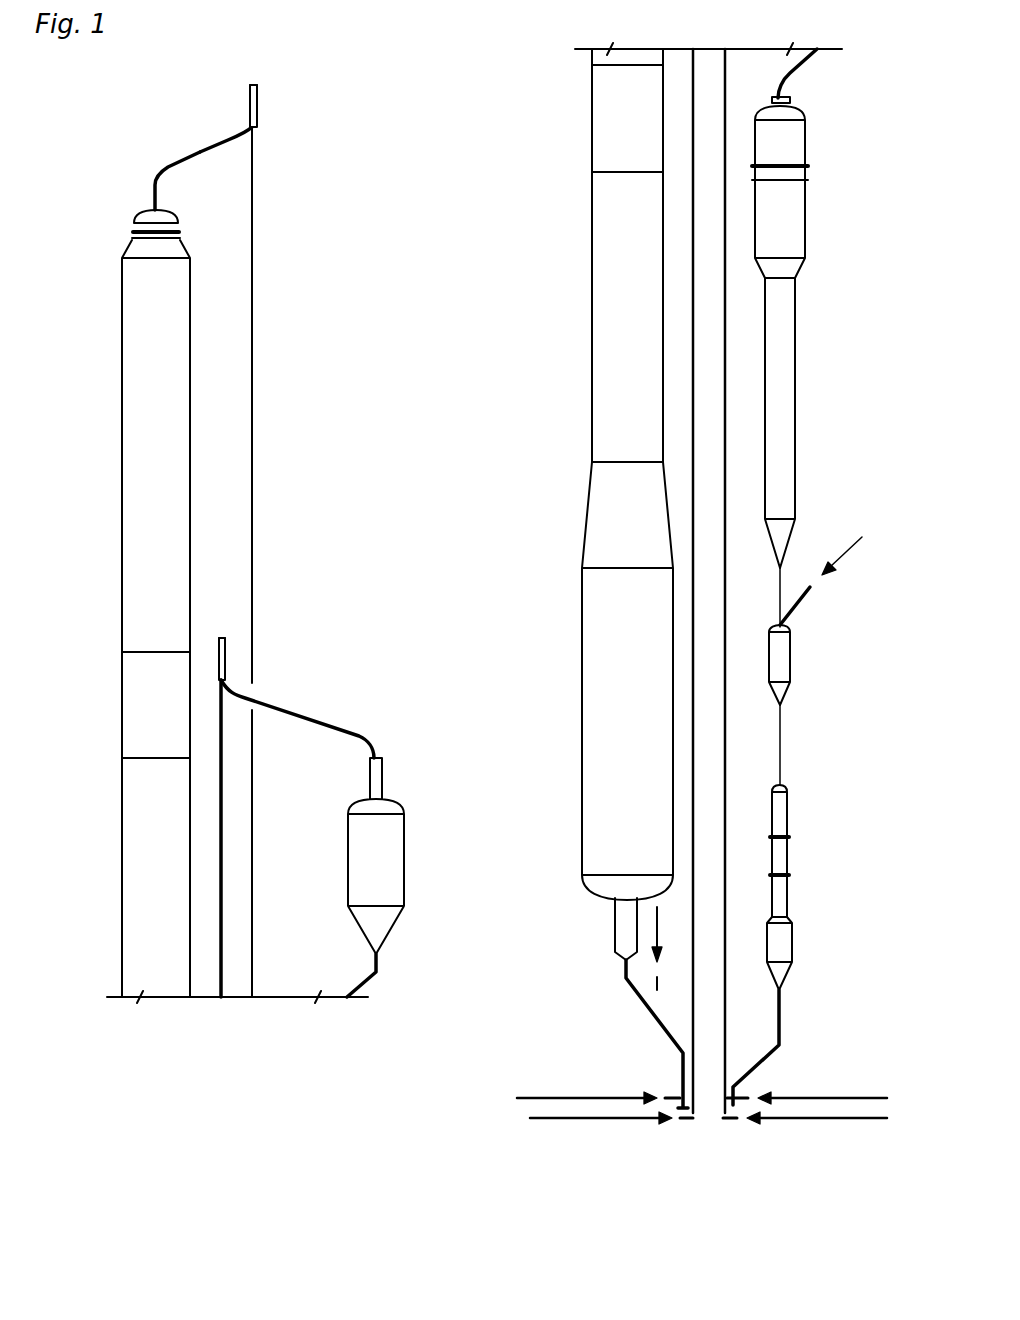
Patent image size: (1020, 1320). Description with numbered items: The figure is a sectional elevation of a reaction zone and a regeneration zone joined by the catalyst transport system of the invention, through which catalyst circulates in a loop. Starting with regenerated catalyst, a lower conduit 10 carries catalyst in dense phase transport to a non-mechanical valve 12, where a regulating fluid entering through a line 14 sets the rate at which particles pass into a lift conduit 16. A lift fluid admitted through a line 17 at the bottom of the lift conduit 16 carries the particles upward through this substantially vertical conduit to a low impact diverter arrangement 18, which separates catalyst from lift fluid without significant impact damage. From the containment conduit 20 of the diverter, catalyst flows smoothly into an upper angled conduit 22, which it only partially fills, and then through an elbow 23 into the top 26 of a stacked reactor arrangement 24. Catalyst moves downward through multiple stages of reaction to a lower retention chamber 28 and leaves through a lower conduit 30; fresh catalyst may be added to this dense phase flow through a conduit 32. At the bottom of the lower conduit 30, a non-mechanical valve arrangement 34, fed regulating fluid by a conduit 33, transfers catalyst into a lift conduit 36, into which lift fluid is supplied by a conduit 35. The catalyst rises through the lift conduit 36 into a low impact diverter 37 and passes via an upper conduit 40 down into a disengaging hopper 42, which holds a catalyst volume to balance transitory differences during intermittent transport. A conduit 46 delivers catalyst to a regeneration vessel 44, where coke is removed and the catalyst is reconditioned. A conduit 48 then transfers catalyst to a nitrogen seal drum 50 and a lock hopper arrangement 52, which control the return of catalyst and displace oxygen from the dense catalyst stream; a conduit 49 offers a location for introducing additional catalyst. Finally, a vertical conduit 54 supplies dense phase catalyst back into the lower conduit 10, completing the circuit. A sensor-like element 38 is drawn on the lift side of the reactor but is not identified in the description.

The lower conduit 10 is at (783, 1062).
The non-mechanical valve 12 is at (733, 1133).
The line 14 is at (745, 1093).
The lift conduit 16 is at (255, 220).
The line 17 is at (728, 1125).
The low impact diverter arrangement 18 is at (247, 84).
The containment conduit 20 is at (258, 97).
The upper angled conduit 22 is at (213, 147).
The elbow 23 is at (157, 172).
The stacked reactor arrangement 24 is at (122, 293).
The top of the stacked reactor arrangement 26 is at (133, 213).
The lower retention chamber 28 is at (615, 933).
The lower conduit 30 is at (655, 1018).
The conduit 32 is at (653, 990).
The conduit 33 is at (675, 1093).
The non-mechanical valve arrangement 34 is at (675, 1127).
The conduit 35 is at (690, 1122).
The lift conduit 36 is at (217, 988).
The low impact diverter 37 is at (217, 637).
The detector 38 is at (228, 657).
The upper conduit 40 is at (303, 710).
The disengaging hopper 42 is at (404, 844).
The regeneration vessel 44 is at (797, 342).
The conduit 46 is at (363, 988).
The conduit 48 is at (780, 573).
The conduit 49 is at (793, 605).
The nitrogen seal drum 50 is at (793, 655).
The lock hopper arrangement 52 is at (785, 868).
The vertical conduit 54 is at (783, 1017).